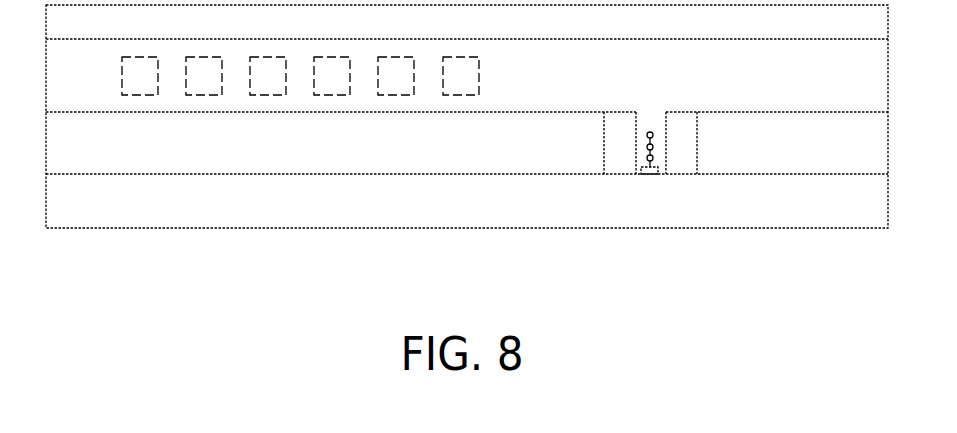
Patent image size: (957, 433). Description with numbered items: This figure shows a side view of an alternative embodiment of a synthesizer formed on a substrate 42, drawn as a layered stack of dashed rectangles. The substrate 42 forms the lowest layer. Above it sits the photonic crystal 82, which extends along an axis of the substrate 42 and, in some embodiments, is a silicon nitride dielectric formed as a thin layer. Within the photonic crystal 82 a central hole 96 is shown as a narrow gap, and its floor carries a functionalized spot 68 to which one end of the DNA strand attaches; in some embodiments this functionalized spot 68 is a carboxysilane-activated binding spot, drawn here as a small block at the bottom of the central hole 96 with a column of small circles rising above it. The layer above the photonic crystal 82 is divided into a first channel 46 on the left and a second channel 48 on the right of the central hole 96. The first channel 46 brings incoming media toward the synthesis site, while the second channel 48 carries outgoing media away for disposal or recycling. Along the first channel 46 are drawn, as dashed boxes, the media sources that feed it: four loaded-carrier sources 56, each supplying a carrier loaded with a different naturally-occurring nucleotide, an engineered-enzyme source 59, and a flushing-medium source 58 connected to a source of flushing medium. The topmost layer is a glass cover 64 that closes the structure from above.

The substrate 42 is at (489, 208).
The first channel 46 is at (524, 86).
The second channel 48 is at (776, 86).
The loaded-carrier sources 56 is at (127, 86).
The flushing-medium source 58 is at (448, 86).
The engineered-enzyme source 59 is at (383, 86).
The glass cover 64 is at (831, 33).
The functionalized spot 68 is at (650, 176).
The photonic crystal 82 is at (347, 154).
The central hole 96 is at (653, 112).